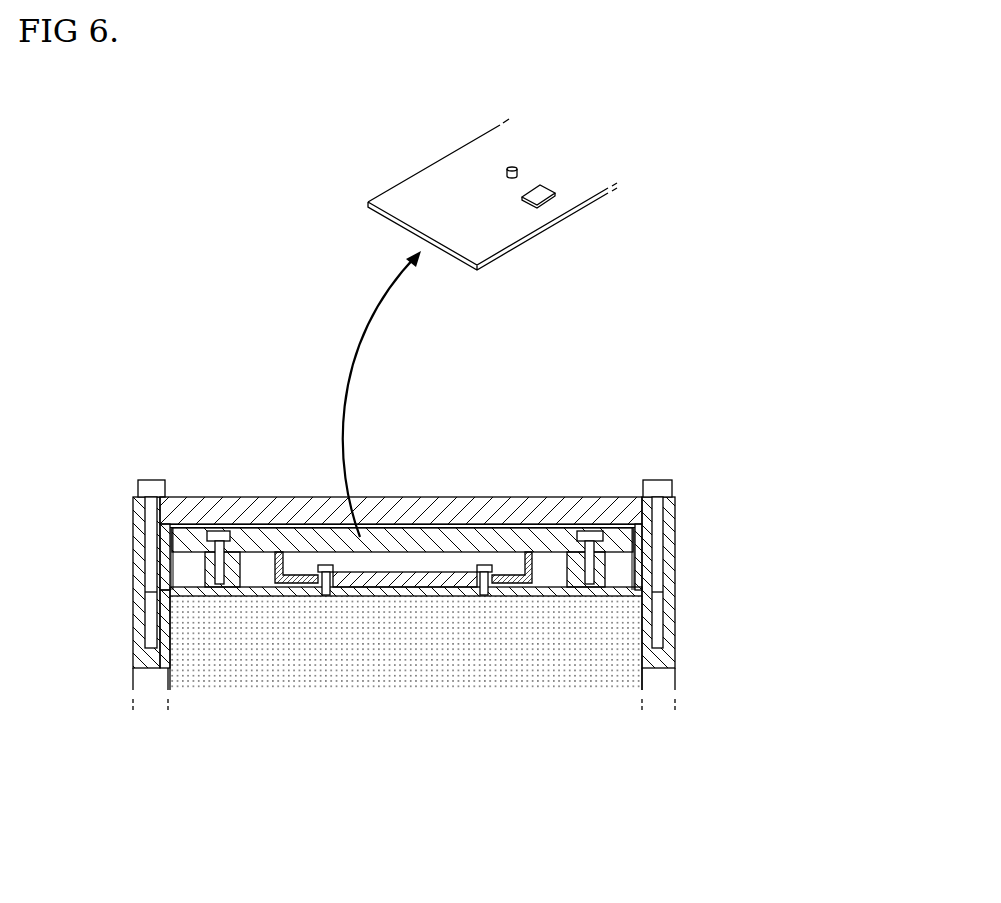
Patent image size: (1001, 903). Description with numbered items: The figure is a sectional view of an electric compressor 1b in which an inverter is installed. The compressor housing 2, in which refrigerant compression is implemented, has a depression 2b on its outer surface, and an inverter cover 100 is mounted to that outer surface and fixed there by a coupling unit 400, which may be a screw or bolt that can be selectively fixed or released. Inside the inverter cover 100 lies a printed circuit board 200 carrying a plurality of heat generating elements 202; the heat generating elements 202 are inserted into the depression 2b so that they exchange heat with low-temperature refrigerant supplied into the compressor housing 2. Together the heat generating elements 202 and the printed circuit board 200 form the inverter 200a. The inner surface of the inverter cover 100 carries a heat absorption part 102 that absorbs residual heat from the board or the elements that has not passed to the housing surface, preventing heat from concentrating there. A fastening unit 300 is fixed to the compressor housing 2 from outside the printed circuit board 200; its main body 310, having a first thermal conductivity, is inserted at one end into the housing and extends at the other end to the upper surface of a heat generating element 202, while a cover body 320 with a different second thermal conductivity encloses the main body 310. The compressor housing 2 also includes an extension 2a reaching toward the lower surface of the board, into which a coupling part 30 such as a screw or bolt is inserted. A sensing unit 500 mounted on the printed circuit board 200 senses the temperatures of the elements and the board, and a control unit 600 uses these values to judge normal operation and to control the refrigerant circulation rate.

The electric compressor 1b is at (176, 394).
The compressor housing 2 is at (690, 620).
The extension 2a is at (563, 567).
The depression 2b is at (413, 587).
The coupling part 30 is at (217, 533).
The inverter cover 100 is at (528, 512).
The heat absorption part 102 is at (641, 556).
The printed circuit board 200 is at (468, 542).
The inverter 200a is at (425, 432).
The heat generating element 202 is at (400, 570).
The fastening unit 300 is at (293, 424).
The main body 310 is at (325, 564).
The cover body 320 is at (312, 572).
The coupling unit 400 is at (677, 465).
The sensing unit 500 is at (512, 167).
The control unit 600 is at (540, 192).